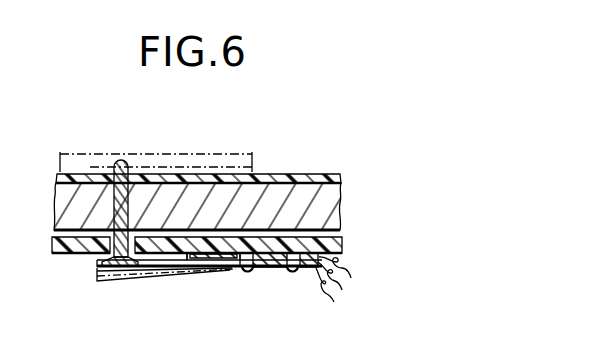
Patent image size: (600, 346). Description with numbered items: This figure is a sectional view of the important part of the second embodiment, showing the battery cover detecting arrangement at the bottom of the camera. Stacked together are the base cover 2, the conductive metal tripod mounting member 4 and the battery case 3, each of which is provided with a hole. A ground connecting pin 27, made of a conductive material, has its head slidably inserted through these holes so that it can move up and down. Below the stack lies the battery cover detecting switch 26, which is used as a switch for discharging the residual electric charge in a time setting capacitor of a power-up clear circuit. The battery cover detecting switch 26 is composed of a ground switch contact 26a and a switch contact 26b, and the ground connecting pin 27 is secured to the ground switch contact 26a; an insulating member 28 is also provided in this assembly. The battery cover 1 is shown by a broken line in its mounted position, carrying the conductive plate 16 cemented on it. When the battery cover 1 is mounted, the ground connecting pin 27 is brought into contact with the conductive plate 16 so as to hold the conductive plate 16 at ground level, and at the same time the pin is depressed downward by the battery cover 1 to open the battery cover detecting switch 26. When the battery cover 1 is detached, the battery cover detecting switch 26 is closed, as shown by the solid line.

The battery cover 1 is at (80, 158).
The conductive plate 16 is at (93, 169).
The ground connecting pin 27 is at (122, 162).
The base cover 2 is at (295, 178).
The tripod mounting member 4 is at (333, 207).
The battery case 3 is at (338, 247).
The battery cover detecting switch 26 is at (194, 281).
The ground switch contact 26a is at (155, 272).
The switch contact 26b is at (219, 270).
The insulating member 28 is at (276, 270).